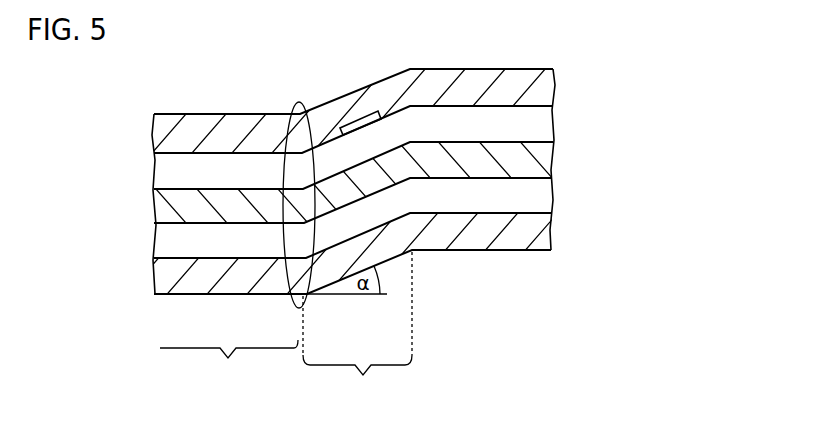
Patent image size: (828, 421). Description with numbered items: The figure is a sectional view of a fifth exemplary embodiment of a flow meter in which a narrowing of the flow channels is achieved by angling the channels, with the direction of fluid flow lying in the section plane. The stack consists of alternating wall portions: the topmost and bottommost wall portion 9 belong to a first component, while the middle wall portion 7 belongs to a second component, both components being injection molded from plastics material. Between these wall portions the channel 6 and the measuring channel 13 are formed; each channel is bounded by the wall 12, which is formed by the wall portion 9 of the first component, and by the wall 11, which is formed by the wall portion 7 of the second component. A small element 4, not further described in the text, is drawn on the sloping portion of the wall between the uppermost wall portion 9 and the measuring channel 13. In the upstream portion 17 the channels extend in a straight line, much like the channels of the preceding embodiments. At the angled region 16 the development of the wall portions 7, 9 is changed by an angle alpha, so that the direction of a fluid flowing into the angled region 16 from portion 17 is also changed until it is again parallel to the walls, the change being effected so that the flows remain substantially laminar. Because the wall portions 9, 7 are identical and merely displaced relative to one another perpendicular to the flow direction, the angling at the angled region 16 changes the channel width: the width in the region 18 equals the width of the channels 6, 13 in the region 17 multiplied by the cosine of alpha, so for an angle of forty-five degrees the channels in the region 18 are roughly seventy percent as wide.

The insert element 4 is at (358, 112).
The channel 6 is at (500, 196).
The wall portion 7 is at (186, 206).
The wall portion 9 is at (228, 133).
The wall 11 is at (219, 210).
The wall 12 is at (184, 138).
The measuring channel 13 is at (495, 123).
The angled region 16 is at (301, 302).
The portion 17 is at (231, 343).
The region 18 is at (357, 327).